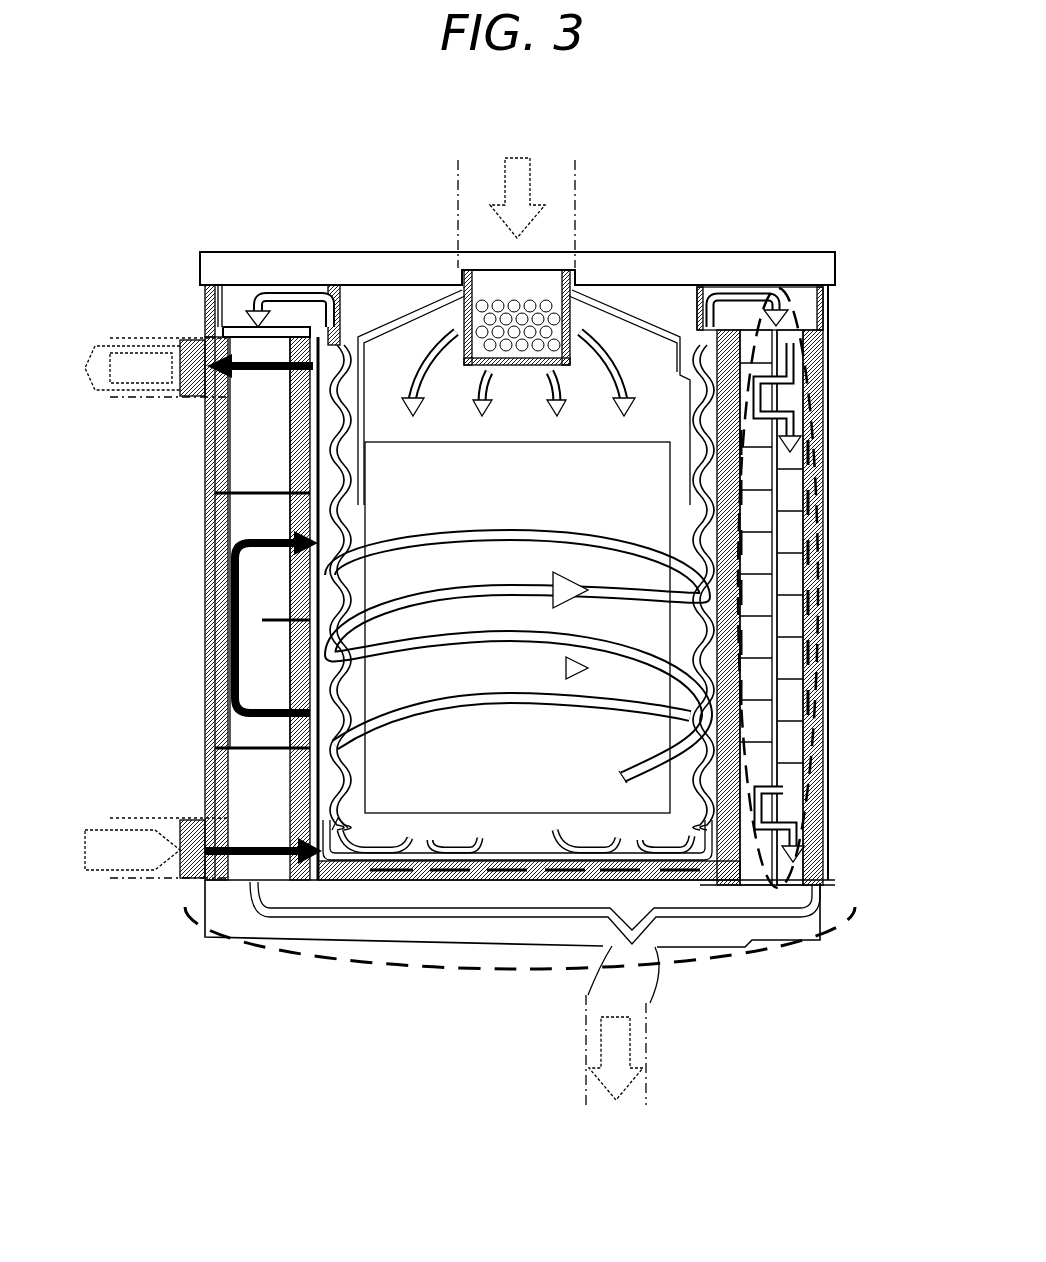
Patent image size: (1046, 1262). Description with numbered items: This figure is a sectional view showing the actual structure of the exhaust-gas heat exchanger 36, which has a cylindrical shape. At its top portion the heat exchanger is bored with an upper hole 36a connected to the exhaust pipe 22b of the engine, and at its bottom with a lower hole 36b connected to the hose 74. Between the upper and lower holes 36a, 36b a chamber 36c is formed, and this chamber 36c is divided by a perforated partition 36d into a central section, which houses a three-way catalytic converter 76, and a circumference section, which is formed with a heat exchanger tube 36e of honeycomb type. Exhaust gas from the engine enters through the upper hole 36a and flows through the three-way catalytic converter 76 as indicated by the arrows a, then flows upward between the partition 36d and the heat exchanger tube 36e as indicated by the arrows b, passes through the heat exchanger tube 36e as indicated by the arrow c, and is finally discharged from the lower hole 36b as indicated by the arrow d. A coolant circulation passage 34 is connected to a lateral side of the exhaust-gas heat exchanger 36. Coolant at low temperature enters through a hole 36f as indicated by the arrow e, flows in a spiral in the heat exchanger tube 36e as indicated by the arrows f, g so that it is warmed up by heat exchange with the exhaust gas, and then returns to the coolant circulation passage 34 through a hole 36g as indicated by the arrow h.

The exhaust pipe 22b is at (578, 190).
The coolant circulation passage 34 is at (115, 398).
The exhaust-gas heat exchanger 36 is at (752, 252).
The upper hole 36a is at (543, 270).
The lower hole 36b is at (655, 975).
The chamber 36c is at (623, 335).
The perforated partition 36d is at (300, 425).
The heat exchanger tube 36e is at (250, 510).
The hole 36f is at (198, 818).
The hole 36g is at (195, 336).
The hose 74 is at (648, 1085).
The three-way catalytic converter 76 is at (517, 627).
The arrows a is at (547, 400).
The arrows b is at (355, 820).
The arrow c is at (290, 295).
The arrow d is at (478, 918).
The arrow e is at (268, 845).
The arrows f is at (525, 700).
The arrows g is at (275, 710).
The arrow h is at (240, 368).